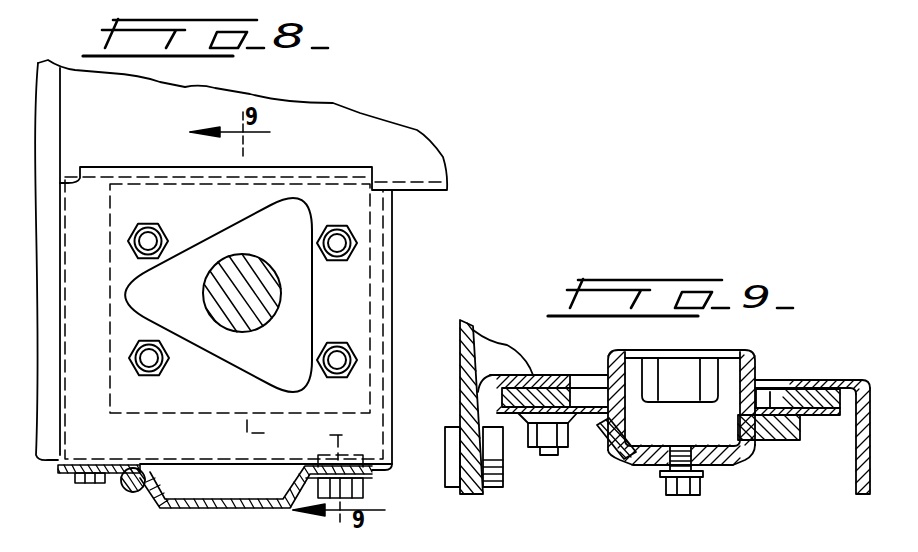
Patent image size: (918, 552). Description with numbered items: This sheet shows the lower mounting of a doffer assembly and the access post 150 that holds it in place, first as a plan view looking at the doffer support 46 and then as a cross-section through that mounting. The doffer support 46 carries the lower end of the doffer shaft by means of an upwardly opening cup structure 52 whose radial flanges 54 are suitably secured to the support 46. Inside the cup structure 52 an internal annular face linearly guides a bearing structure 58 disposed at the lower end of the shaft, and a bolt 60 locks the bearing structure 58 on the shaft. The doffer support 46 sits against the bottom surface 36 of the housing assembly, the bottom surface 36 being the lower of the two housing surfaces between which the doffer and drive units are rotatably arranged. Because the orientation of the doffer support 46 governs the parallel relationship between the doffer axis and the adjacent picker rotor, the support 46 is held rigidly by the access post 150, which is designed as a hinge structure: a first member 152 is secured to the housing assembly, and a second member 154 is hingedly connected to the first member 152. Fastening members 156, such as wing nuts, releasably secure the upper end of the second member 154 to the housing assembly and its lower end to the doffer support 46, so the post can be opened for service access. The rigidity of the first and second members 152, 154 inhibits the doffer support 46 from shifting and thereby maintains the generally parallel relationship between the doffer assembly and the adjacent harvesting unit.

In FIG. 9, the bottom surface 36 is at (852, 380).
In FIG. 8, the doffer support 46 is at (392, 278).
In FIG. 9, the doffer support 46 is at (856, 480).
In FIG. 9, the cup structure 52 is at (625, 452).
In FIG. 9, the radial flanges 54 is at (773, 440).
In FIG. 9, the bearing structure 58 is at (725, 346).
In FIG. 9, the bolt 60 is at (712, 382).
In FIG. 8, the access post 150 is at (142, 500).
In FIG. 8, the first member 152 is at (59, 475).
In FIG. 8, the second member 154 is at (212, 510).
In FIG. 9, the second member 154 is at (472, 498).
In FIG. 8, the fastening members 156 is at (367, 483).
In FIG. 9, the fastening members 156 is at (452, 428).